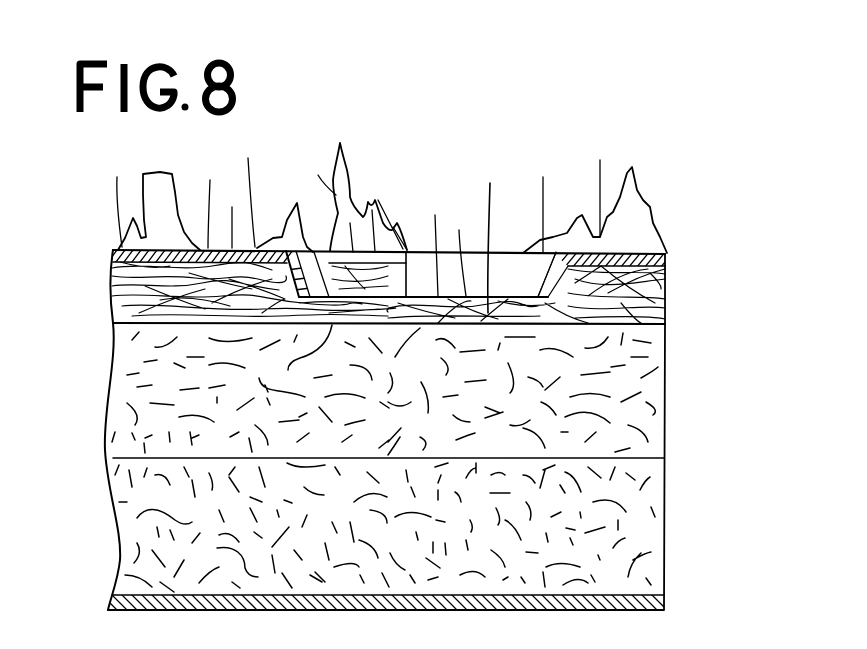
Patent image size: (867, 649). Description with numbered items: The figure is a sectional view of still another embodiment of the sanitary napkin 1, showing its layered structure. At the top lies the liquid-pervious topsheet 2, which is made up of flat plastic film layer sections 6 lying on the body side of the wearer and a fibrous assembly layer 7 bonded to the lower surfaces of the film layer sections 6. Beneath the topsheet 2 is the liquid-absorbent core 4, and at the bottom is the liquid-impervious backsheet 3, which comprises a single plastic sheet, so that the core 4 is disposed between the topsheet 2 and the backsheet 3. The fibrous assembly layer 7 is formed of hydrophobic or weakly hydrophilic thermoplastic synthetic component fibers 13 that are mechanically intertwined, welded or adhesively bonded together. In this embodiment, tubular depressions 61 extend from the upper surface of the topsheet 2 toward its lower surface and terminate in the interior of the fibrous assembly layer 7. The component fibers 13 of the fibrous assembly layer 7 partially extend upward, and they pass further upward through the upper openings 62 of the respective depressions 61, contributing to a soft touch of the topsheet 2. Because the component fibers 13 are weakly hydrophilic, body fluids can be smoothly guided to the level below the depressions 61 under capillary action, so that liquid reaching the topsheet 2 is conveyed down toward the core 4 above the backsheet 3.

The sanitary napkin 1 is at (542, 82).
The topsheet 2 is at (712, 212).
The backsheet 3 is at (647, 605).
The liquid-absorbent core 4 is at (640, 522).
The film layer sections 6 is at (663, 253).
The fibrous assembly layer 7 is at (662, 283).
The component fibers 13 is at (490, 199).
The tubular depressions 61 is at (511, 264).
The upper openings 62 is at (421, 258).